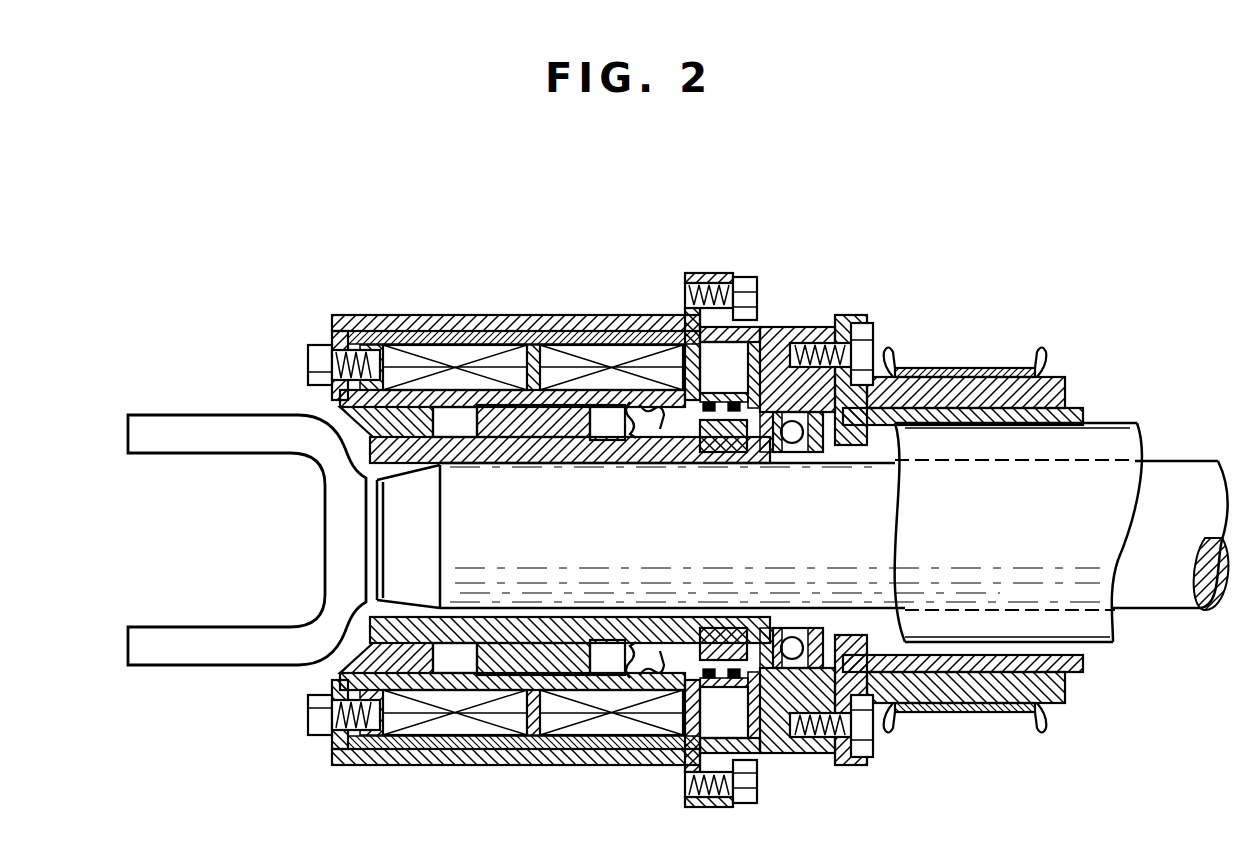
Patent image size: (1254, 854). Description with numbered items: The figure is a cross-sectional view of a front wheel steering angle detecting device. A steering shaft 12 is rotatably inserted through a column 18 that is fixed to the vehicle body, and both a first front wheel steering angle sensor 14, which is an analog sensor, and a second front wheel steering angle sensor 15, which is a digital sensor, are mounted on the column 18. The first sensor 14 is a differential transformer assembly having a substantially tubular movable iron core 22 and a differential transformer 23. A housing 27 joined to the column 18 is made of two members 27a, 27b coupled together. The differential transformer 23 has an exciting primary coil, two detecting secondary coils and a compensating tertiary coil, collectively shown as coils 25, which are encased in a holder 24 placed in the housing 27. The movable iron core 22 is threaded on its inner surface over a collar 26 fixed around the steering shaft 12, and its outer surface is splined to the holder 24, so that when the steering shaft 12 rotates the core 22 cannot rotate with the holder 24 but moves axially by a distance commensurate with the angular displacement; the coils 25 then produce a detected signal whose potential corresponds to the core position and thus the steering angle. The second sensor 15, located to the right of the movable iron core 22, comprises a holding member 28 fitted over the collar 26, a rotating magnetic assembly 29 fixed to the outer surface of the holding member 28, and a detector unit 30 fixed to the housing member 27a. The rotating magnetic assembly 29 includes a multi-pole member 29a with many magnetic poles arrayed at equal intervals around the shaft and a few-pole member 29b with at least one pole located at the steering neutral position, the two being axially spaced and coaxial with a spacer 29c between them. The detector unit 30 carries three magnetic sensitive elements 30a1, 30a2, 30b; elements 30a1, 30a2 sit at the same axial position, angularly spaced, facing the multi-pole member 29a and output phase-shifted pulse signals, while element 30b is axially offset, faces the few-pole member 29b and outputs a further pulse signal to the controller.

The steering shaft 12 is at (1172, 482).
The first front wheel steering angle sensor 14 is at (424, 302).
The second front wheel steering angle sensor 15 is at (773, 300).
The column 18 is at (1115, 643).
The movable iron core 22 is at (560, 408).
The differential transformer 23 is at (486, 302).
The holder 24 is at (527, 345).
The coils 25 is at (612, 350).
The collar 26 is at (525, 452).
The housing 27 is at (720, 273).
The housing member 27a is at (805, 325).
The housing member 27b is at (650, 318).
The holding member 28 is at (700, 632).
The rotating magnetic assembly 29 is at (768, 690).
The multi-pole member 29a is at (690, 745).
The few-pole member 29b is at (767, 703).
The spacer 29c is at (722, 682).
The detector unit 30 is at (726, 392).
The magnetic sensitive element 30a1 is at (705, 404).
The magnetic sensitive element 30a2 is at (706, 461).
The magnetic sensitive element 30b is at (748, 445).